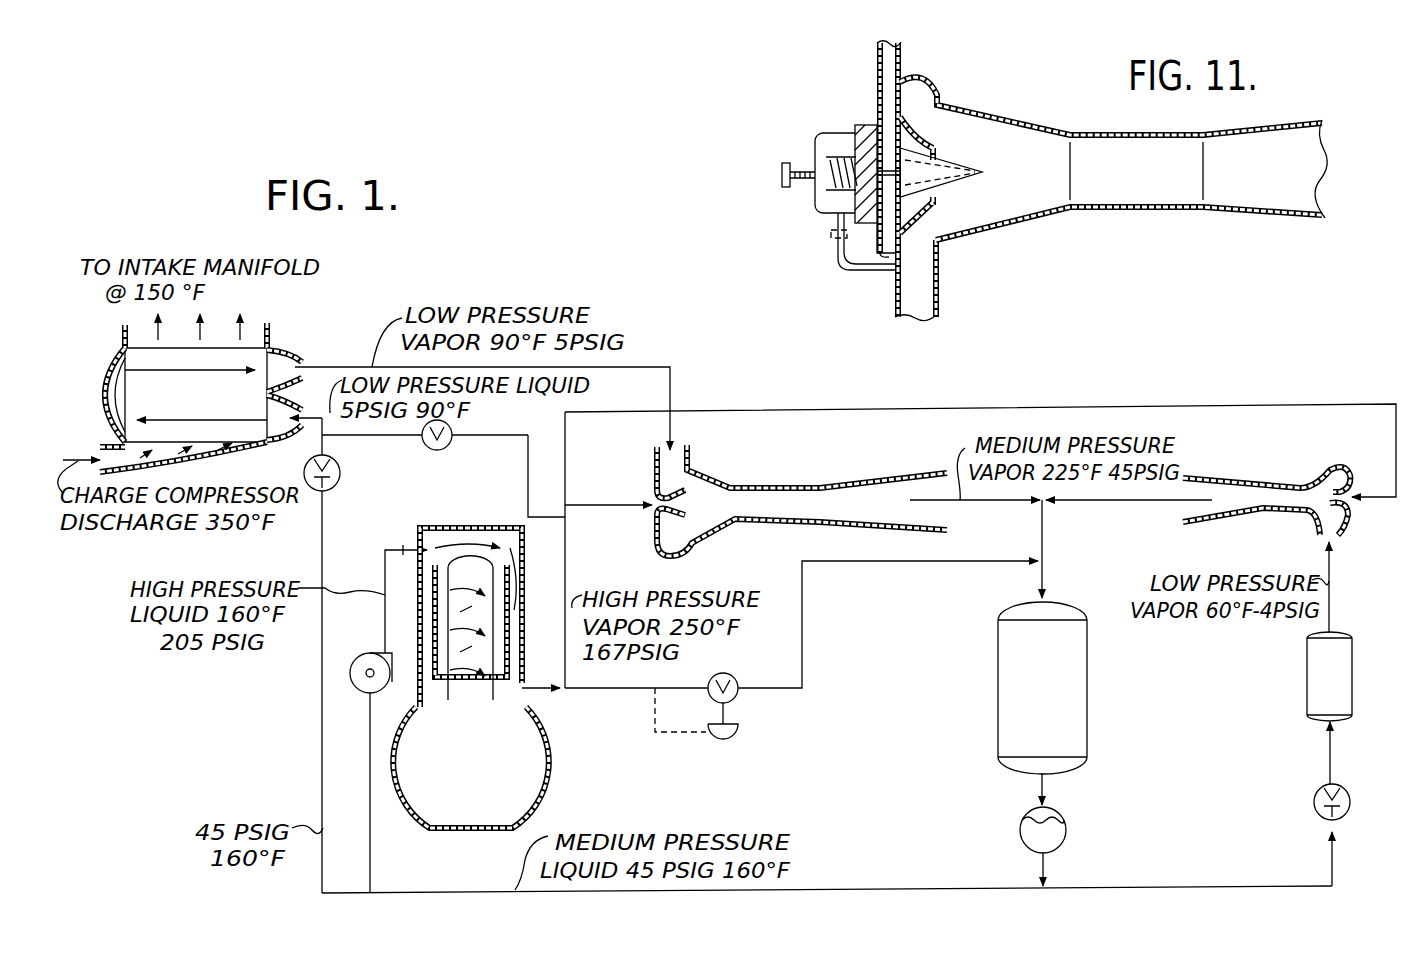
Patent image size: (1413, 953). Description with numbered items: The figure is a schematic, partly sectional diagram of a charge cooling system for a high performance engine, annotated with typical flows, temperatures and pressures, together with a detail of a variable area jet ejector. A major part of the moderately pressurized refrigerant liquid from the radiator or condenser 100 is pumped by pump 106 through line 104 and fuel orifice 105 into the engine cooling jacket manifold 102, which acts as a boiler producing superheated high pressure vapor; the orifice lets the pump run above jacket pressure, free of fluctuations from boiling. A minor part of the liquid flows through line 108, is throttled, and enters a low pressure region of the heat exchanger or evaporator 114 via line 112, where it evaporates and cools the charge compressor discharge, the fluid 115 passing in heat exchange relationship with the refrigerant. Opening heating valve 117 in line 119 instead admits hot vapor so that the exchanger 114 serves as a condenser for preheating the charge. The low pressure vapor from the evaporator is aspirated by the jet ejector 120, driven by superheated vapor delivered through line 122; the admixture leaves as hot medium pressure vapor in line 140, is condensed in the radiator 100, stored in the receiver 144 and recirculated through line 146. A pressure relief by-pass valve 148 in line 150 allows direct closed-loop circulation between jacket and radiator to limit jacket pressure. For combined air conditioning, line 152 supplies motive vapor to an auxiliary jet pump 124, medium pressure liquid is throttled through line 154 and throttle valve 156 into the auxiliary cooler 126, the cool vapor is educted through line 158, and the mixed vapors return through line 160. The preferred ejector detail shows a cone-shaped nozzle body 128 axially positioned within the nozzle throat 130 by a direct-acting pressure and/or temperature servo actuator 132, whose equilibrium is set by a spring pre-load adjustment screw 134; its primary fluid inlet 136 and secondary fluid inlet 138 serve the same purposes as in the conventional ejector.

In FIG. 1, the radiator (condenser) 100 is at (997, 698).
In FIG. 1, the engine cooling jacket manifold 102 is at (518, 600).
In FIG. 1, the line 104 is at (397, 548).
In FIG. 1, the fuel orifice 105 is at (412, 545).
In FIG. 1, the pump 106 is at (363, 690).
In FIG. 1, the line 108 is at (323, 668).
In FIG. 1, the line 112 is at (316, 438).
In FIG. 1, the heat exchanger (evaporator) 114 is at (100, 392).
In FIG. 1, the fluid 115 is at (66, 460).
In FIG. 1, the heating valve 117 is at (443, 450).
In FIG. 1, the line 119 is at (528, 472).
In FIG. 1, the jet ejector 120 is at (757, 488).
In FIG. 1, the line 122 is at (615, 490).
In FIG. 1, the auxiliary jet pump 124 is at (1250, 478).
In FIG. 1, the auxiliary cooler 126 is at (1305, 690).
In FIG. 11, the nozzle body 128 is at (975, 170).
In FIG. 11, the nozzle throat 130 is at (936, 137).
In FIG. 11, the servo actuator 132 is at (825, 136).
In FIG. 11, the spring pre-load adjustment screw 134 is at (802, 185).
In FIG. 11, the primary fluid inlet 136 is at (902, 55).
In FIG. 11, the secondary fluid inlet 138 is at (940, 280).
In FIG. 1, the line 140 is at (995, 503).
In FIG. 1, the receiver 144 is at (1068, 828).
In FIG. 1, the line 146 is at (825, 888).
In FIG. 1, the pressure relief by-pass valve 148 is at (738, 696).
In FIG. 1, the line 150 is at (610, 690).
In FIG. 1, the line 152 is at (1160, 407).
In FIG. 1, the line 154 is at (1142, 886).
In FIG. 1, the throttle valve 156 is at (1312, 800).
In FIG. 1, the line 158 is at (1330, 560).
In FIG. 1, the line 160 is at (1126, 503).